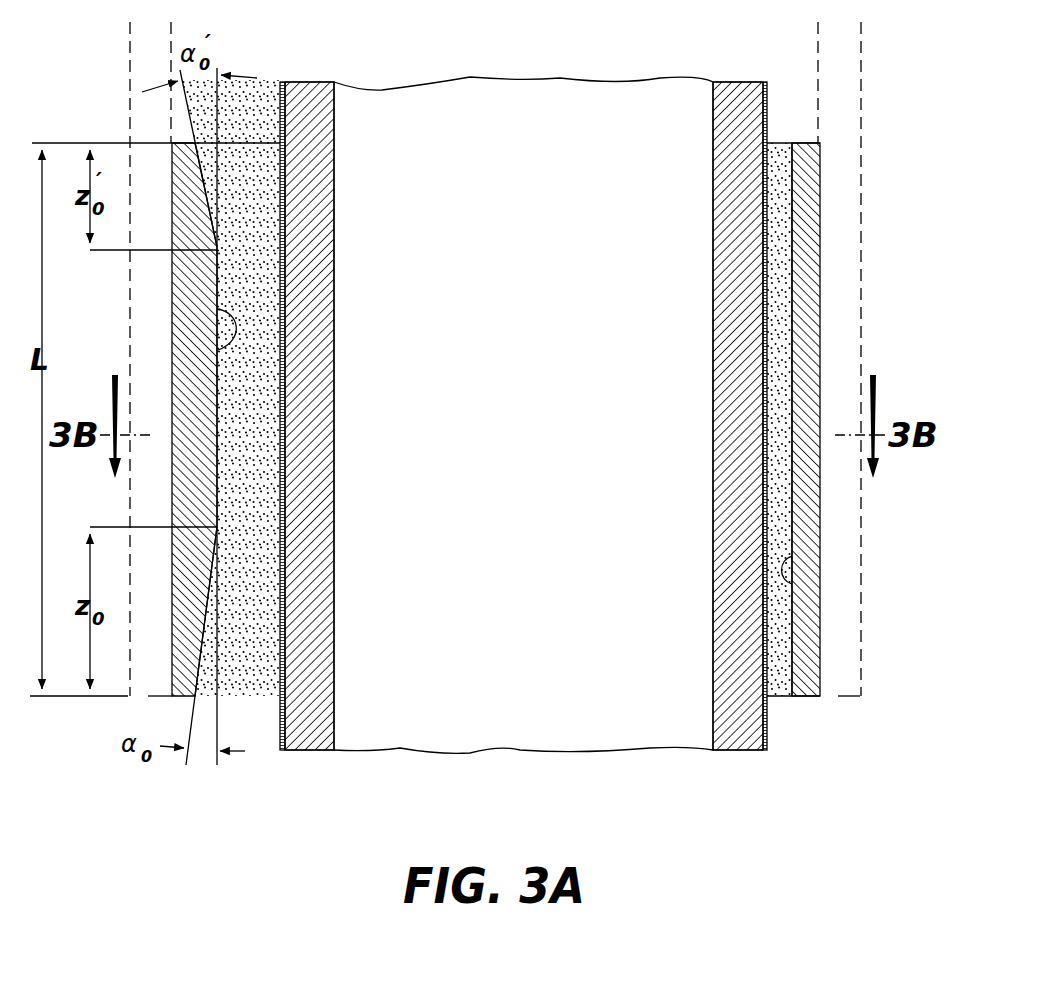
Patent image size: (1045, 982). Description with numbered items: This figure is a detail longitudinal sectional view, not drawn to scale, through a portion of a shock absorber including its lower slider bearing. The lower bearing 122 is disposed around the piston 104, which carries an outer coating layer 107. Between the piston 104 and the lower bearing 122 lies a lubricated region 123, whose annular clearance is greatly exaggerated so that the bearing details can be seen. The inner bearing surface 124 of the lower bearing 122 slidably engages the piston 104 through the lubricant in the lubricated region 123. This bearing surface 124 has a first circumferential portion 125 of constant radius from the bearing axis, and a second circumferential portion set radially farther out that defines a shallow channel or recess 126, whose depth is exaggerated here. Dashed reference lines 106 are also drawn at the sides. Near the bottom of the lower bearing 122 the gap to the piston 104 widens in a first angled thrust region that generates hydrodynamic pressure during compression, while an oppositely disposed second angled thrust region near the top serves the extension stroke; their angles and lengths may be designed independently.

The piston 104 is at (338, 135).
The reference axis lines 106 is at (867, 147).
The outer coating layer 107 is at (274, 101).
The lower bearing 122 is at (820, 278).
The lubricated region 123 is at (782, 339).
The bearing surface 124 is at (794, 174).
The first circumferential portion 125 is at (217, 309).
The shallow channel or recess 126 is at (792, 584).